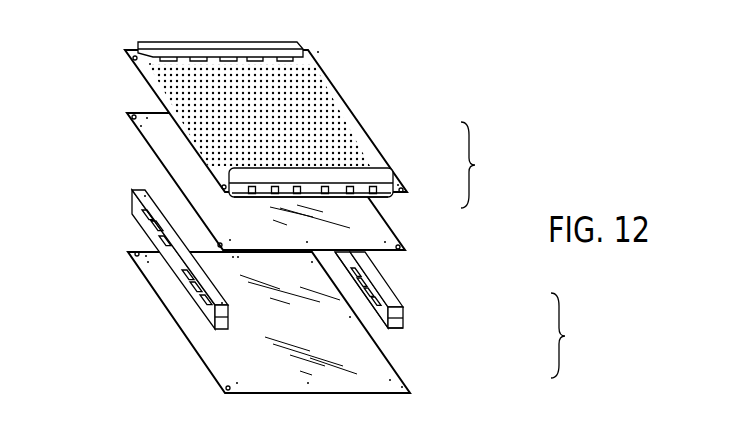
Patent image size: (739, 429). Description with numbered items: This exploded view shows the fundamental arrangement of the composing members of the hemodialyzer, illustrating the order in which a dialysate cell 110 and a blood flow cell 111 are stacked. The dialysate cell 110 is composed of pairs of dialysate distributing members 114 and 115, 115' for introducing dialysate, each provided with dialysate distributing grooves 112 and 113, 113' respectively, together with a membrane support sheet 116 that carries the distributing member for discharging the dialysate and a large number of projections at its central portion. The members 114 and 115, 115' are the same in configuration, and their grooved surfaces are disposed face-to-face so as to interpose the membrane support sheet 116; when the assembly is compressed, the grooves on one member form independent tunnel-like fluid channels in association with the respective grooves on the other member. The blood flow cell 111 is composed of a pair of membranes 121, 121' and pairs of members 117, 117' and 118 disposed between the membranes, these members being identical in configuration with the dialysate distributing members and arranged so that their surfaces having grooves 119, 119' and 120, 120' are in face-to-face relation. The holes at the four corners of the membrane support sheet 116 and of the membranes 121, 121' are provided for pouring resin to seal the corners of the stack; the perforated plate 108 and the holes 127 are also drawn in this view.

The perforated plate 108 is at (347, 113).
The dialysate cell 110 is at (484, 165).
The blood flow cell 111 is at (571, 335).
The dialysate distributing groove 112 is at (263, 62).
The dialysate distributing groove 113 is at (325, 144).
The dialysate distributing groove 113' is at (341, 216).
The dialysate distributing member 114 is at (138, 50).
The dialysate distributing member 115 is at (341, 155).
The dialysate distributing member 115' is at (346, 190).
The membrane support sheet 116 is at (393, 192).
The member 117 is at (435, 294).
The member 117' is at (438, 307).
The member 118 is at (132, 192).
The groove 119 is at (425, 320).
The groove 119' is at (412, 341).
The groove 120 is at (110, 228).
The groove 120' is at (137, 267).
The membrane 121 is at (331, 211).
The membrane 121' is at (335, 322).
The holes 127 is at (128, 57).